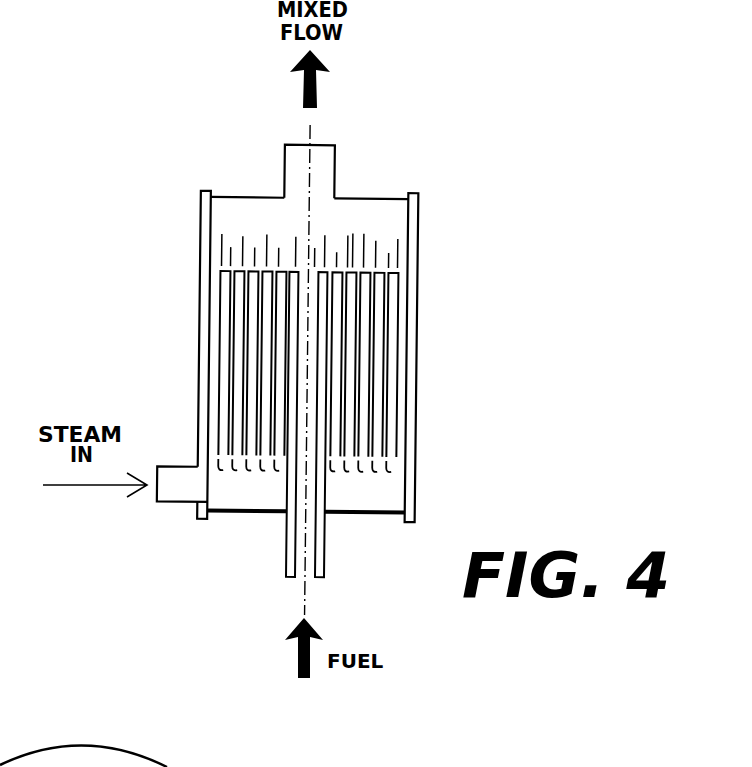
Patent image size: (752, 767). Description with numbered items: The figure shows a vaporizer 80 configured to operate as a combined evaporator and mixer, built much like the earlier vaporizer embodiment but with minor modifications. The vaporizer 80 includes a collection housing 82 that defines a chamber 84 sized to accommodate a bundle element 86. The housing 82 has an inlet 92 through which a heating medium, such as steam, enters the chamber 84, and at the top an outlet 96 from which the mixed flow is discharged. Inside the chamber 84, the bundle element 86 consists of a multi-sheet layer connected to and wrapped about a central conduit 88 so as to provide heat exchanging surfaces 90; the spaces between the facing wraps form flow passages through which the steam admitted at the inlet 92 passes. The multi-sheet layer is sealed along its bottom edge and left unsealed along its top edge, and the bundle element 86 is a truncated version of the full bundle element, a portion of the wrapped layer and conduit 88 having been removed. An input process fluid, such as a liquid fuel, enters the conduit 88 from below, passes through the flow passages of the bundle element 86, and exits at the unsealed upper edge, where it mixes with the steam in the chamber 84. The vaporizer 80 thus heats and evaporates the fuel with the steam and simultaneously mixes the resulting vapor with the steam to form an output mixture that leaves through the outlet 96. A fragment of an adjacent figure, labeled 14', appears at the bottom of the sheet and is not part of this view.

The vaporizer 80 is at (498, 147).
The collection housing 82 is at (417, 392).
The chamber 84 is at (401, 232).
The bundle element 86 is at (357, 230).
The conduit 88 is at (328, 557).
The heat exchanging surfaces 90 is at (226, 281).
The inlet 92 is at (176, 505).
The mixed flow outlet 96 is at (284, 164).
The adjacent figure fragment 14' is at (265, 753).